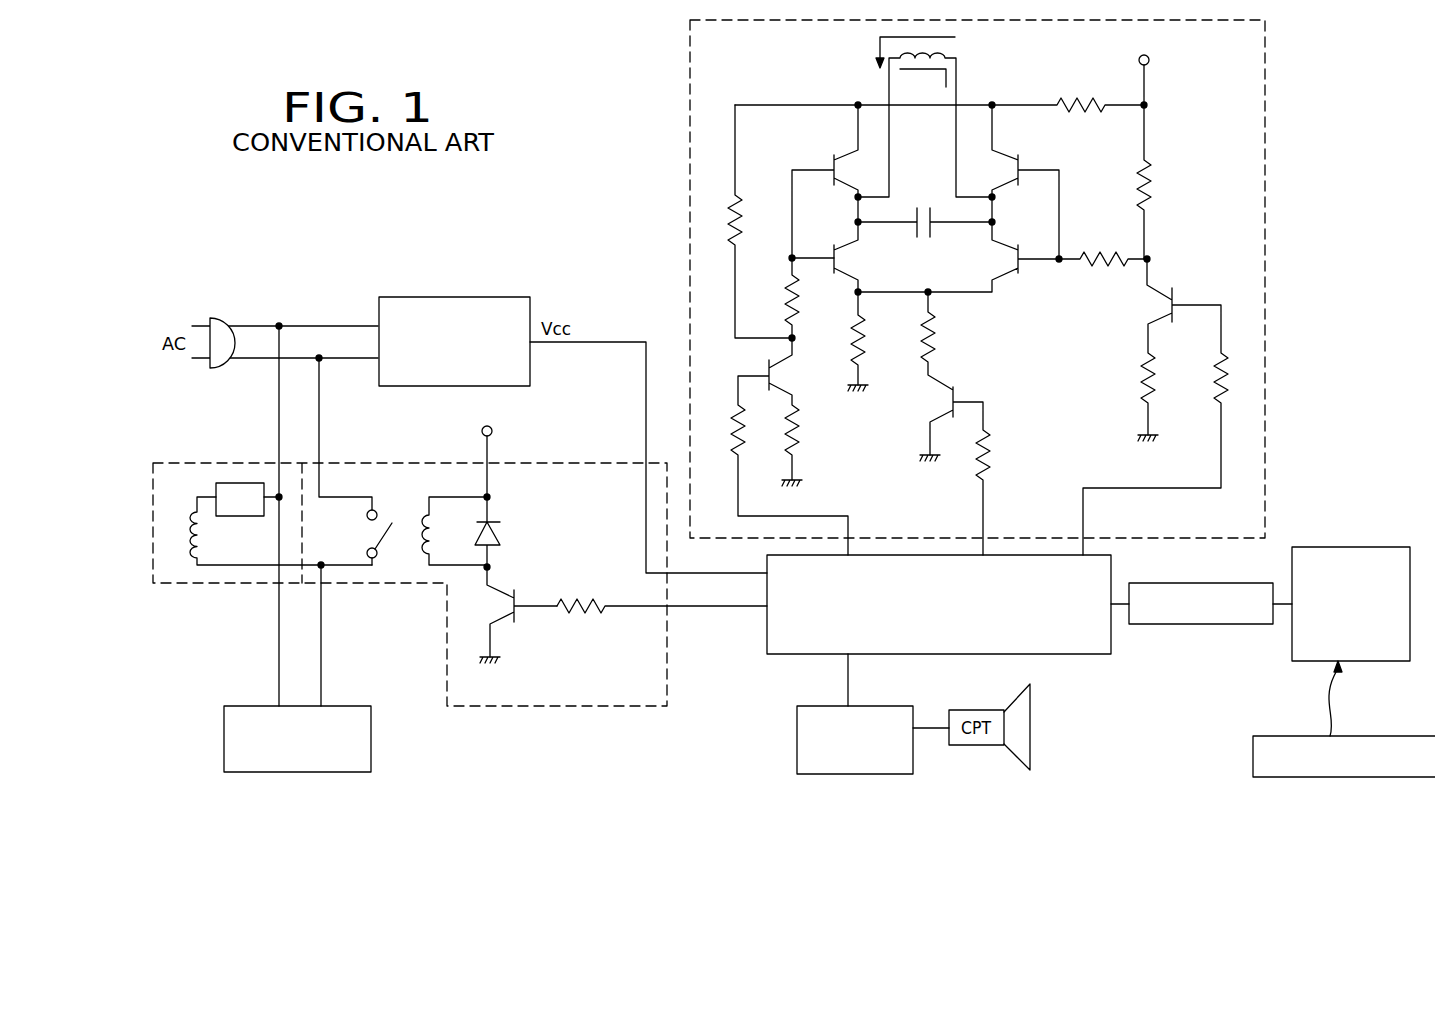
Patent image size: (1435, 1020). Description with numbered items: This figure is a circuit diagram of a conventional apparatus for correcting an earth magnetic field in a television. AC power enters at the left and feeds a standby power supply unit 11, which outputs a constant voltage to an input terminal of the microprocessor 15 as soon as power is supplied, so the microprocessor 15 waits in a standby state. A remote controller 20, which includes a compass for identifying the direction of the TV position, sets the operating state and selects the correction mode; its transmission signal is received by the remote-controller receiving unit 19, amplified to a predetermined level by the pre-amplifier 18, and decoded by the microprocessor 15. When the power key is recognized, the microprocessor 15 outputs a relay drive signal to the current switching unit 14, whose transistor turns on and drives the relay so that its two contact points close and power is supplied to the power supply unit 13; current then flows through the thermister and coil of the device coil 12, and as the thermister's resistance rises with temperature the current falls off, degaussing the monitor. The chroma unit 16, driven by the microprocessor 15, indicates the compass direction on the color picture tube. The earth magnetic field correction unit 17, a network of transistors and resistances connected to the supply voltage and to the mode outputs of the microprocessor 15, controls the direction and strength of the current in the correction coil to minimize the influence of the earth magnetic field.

The standby power supply unit 11 is at (430, 297).
The device coil 12 is at (197, 584).
The power supply unit 13 is at (372, 726).
The current switching unit 14 is at (557, 706).
The microprocessor 15 is at (1079, 654).
The chroma unit 16 is at (855, 774).
The earth magnetic field correction unit 17 is at (1265, 268).
The pre-amplifier 18 is at (1195, 624).
The remote-controller receiving unit 19 is at (1347, 547).
The remote controller 20 is at (1333, 777).